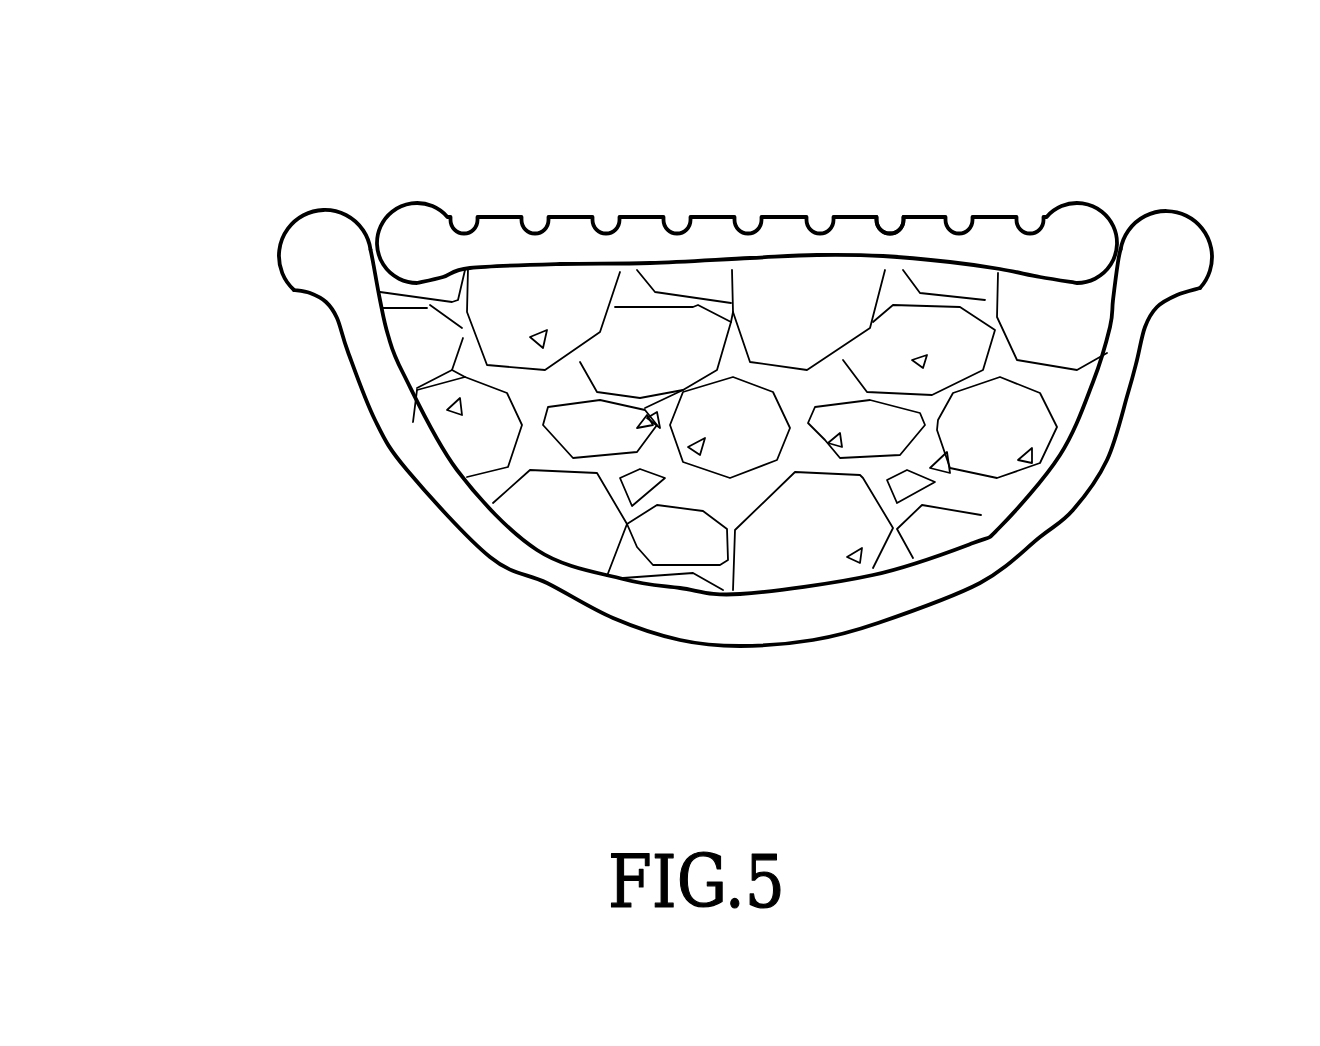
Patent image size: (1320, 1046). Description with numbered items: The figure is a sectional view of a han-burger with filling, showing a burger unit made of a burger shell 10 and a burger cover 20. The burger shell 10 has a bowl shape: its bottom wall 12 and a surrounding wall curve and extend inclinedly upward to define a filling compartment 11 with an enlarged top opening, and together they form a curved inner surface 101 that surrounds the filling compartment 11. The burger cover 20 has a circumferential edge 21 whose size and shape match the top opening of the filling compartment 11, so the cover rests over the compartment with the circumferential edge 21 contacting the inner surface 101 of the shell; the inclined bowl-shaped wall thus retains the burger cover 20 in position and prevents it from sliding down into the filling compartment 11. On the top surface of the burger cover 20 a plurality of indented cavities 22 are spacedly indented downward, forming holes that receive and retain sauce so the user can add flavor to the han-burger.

The burger shell 10 is at (707, 413).
The inner surface 101 is at (455, 476).
The filling compartment 11 is at (557, 518).
The bottom wall 12 is at (729, 651).
The burger cover 20 is at (747, 164).
The circumferential edge 21 is at (1126, 222).
The indented cavity 22 is at (893, 220).